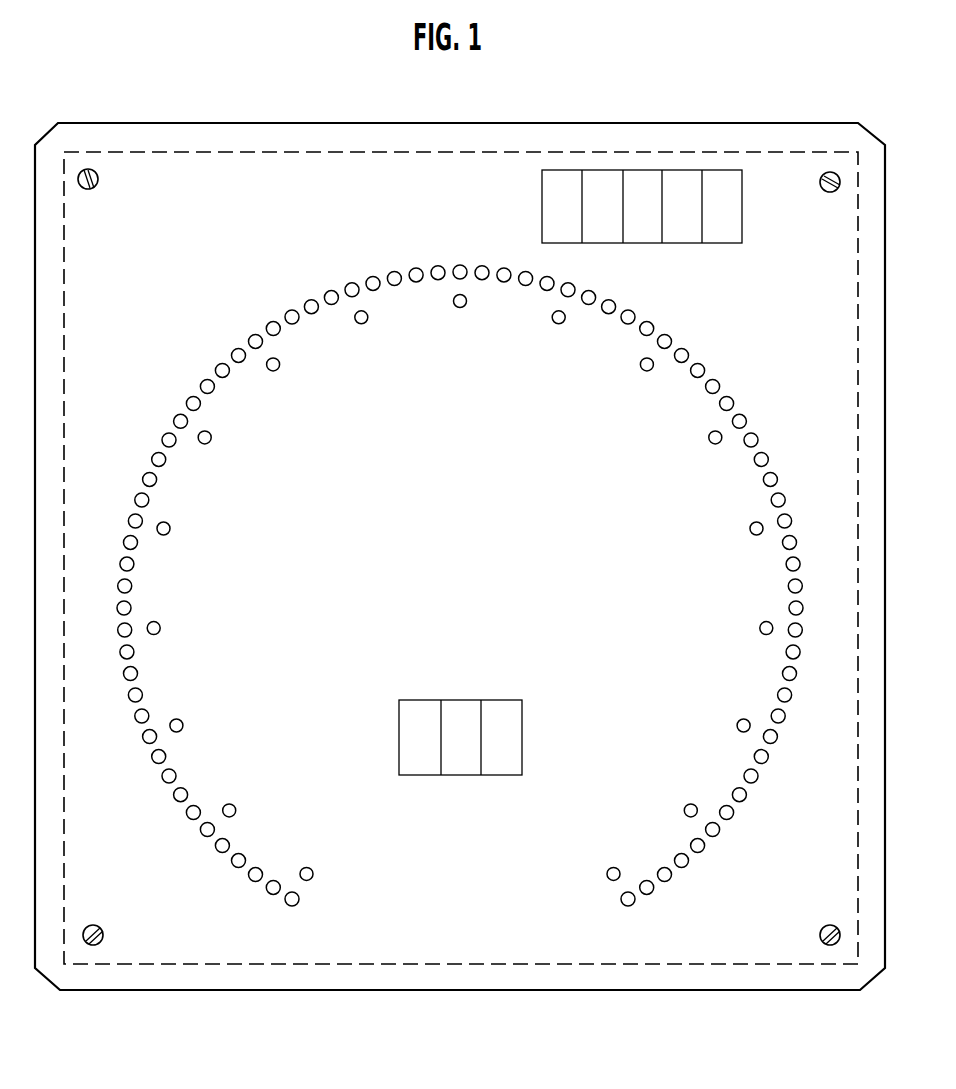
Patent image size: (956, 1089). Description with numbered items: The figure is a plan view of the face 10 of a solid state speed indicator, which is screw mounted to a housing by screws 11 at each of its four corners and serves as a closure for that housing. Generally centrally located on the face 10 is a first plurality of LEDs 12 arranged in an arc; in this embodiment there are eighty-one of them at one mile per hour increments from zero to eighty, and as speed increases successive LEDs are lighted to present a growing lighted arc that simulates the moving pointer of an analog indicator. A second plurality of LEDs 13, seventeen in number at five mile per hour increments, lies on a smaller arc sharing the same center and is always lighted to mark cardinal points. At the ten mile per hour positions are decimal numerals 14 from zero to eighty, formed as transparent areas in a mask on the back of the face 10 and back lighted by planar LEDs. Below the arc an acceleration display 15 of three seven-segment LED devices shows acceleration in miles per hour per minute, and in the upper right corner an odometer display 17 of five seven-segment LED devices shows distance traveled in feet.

The face 10 is at (306, 1000).
The screws 11 is at (98, 183).
The first plurality of LEDs 12 is at (252, 334).
The second plurality of LEDs 13 is at (708, 441).
The decimal numerals 14 is at (235, 545).
The acceleration display 15 is at (509, 700).
The odometer display 17 is at (728, 243).